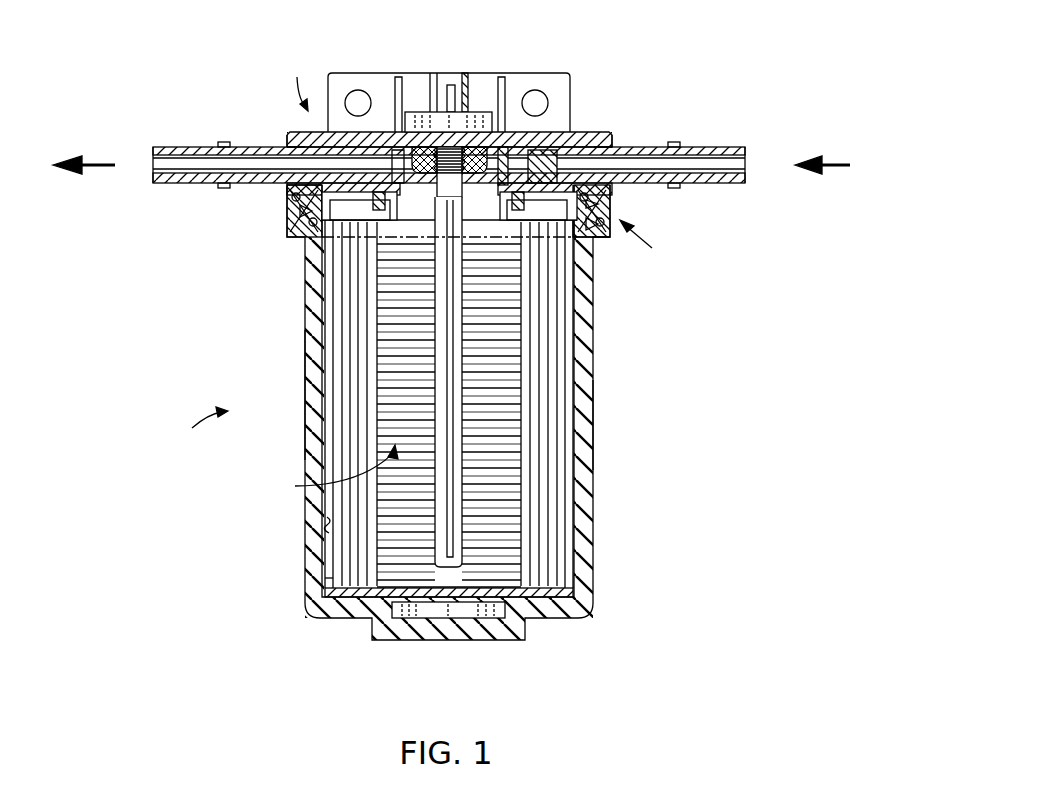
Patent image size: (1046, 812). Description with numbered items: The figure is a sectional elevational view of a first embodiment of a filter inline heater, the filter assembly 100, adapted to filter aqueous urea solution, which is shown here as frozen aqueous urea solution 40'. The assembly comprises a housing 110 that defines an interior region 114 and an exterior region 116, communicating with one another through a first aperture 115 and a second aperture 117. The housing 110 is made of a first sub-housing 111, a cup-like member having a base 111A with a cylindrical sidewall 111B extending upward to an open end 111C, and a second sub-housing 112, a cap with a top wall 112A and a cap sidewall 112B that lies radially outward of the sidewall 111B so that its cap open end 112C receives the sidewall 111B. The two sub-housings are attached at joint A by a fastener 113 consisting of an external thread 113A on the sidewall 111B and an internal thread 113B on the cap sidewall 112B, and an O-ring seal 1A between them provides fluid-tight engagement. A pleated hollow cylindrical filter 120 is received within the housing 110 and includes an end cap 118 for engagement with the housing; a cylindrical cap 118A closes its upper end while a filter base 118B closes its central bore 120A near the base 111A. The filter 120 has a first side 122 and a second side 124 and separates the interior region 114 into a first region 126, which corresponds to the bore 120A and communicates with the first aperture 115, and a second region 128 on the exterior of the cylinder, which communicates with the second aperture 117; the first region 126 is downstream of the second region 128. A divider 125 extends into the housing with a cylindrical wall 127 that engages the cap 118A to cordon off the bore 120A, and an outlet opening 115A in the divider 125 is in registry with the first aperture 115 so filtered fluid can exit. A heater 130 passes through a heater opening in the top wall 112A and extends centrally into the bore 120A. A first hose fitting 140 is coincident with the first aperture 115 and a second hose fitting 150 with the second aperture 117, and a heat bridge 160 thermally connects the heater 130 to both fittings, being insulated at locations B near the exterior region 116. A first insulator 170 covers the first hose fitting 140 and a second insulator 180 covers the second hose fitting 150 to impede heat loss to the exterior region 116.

The filter assembly 100 is at (194, 432).
The housing 110 is at (312, 350).
The first sub-housing 111 is at (308, 399).
The base 111A is at (541, 606).
The sidewall 111B is at (585, 420).
The open end 111C is at (612, 205).
The second sub-housing 112 is at (317, 200).
The top wall 112A is at (333, 74).
The cap sidewall 112B is at (287, 222).
The cap open end 112C is at (592, 242).
The fastener 113 is at (298, 222).
The external thread 113A is at (600, 202).
The internal thread 113B is at (591, 228).
The interior region 114 is at (386, 487).
The first aperture 115 is at (152, 187).
The outlet opening 115A is at (392, 240).
The exterior region 116 is at (490, 707).
The second aperture 117 is at (744, 183).
The end cap 118 is at (367, 218).
The cylindrical cap 118A is at (549, 165).
The filter base 118B is at (379, 597).
The filter 120 is at (543, 360).
The central bore 120A is at (333, 490).
The first side 122 is at (380, 572).
The second side 124 is at (334, 578).
The divider 125 is at (527, 240).
The first region 126 is at (420, 323).
The cylindrical wall 127 is at (403, 232).
The second region 128 is at (325, 525).
The heater 130 is at (448, 412).
The first hose fitting 140 is at (188, 147).
The second hose fitting 150 is at (716, 147).
The heat bridge 160 is at (318, 140).
The first insulator 170 is at (307, 132).
The second insulator 180 is at (600, 132).
The frozen aqueous urea solution 40' is at (616, 247).
The O-ring seal 1A is at (318, 188).
The joint A is at (650, 244).
The insulated locations B is at (307, 81).